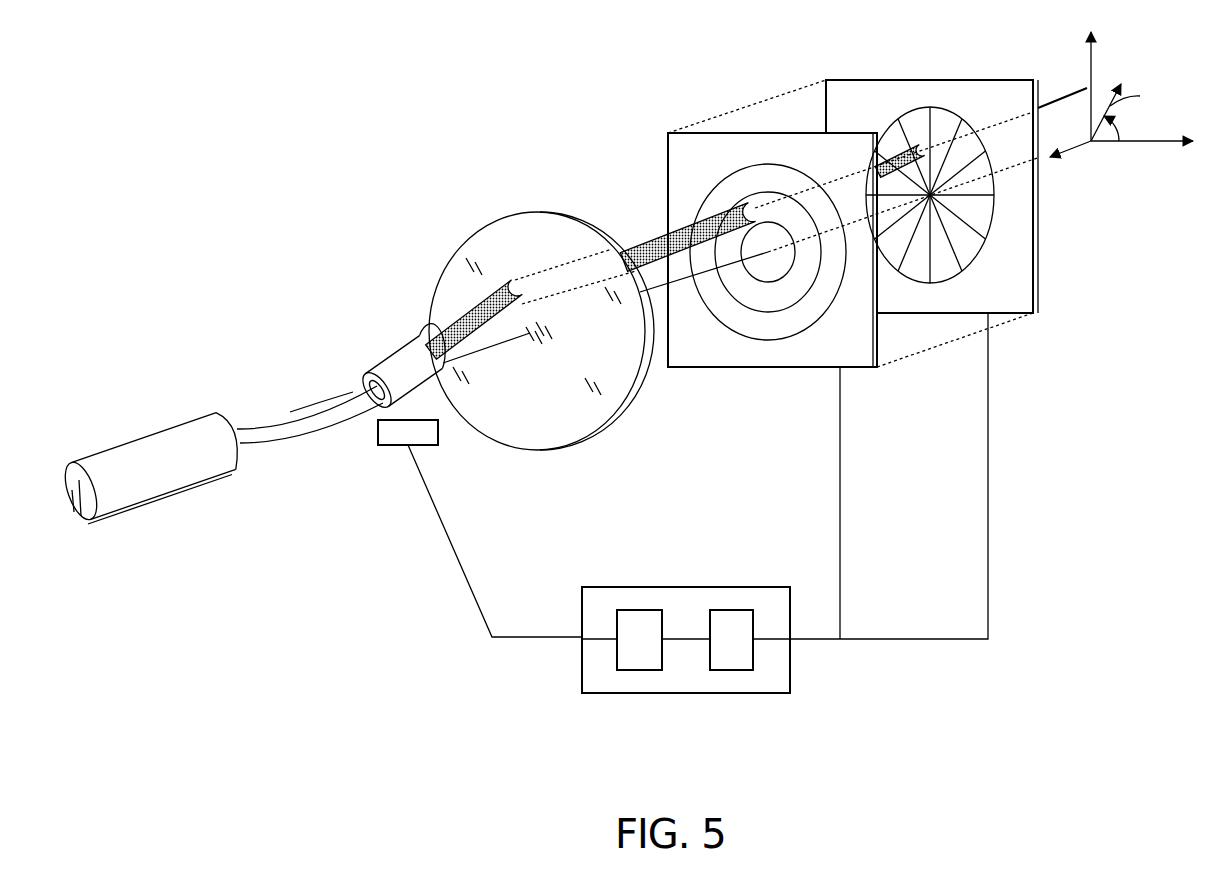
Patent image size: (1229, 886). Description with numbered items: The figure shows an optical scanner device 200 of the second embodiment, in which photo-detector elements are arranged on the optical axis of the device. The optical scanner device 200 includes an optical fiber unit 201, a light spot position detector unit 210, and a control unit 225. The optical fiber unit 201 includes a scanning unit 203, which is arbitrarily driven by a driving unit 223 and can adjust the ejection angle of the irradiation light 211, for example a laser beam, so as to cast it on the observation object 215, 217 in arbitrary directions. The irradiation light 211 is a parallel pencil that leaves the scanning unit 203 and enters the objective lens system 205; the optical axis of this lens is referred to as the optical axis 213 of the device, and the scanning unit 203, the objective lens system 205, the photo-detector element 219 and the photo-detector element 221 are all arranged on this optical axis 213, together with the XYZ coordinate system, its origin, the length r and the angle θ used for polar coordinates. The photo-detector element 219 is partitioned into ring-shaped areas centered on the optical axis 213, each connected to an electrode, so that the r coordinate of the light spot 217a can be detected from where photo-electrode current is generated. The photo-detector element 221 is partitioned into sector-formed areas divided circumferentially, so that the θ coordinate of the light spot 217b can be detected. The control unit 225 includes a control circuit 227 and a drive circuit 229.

The optical scanner device 200 is at (1010, 500).
The optical fiber unit 201 is at (285, 450).
The scanning unit 203 is at (390, 357).
The objective lens system 205 is at (500, 238).
The light spot position detector unit 210 is at (575, 132).
The irradiation light 211 is at (452, 330).
The optical axis 213 is at (658, 293).
The observation object 215 is at (1075, 68).
The observation object 217 is at (1087, 88).
The light spot 217a is at (757, 205).
The light spot 217b is at (927, 150).
The photo-detector element 219 is at (672, 152).
The photo-detector element 221 is at (855, 80).
The driving unit 223 is at (395, 447).
The control unit 225 is at (705, 565).
The control circuit 227 is at (740, 668).
The drive circuit 229 is at (640, 668).